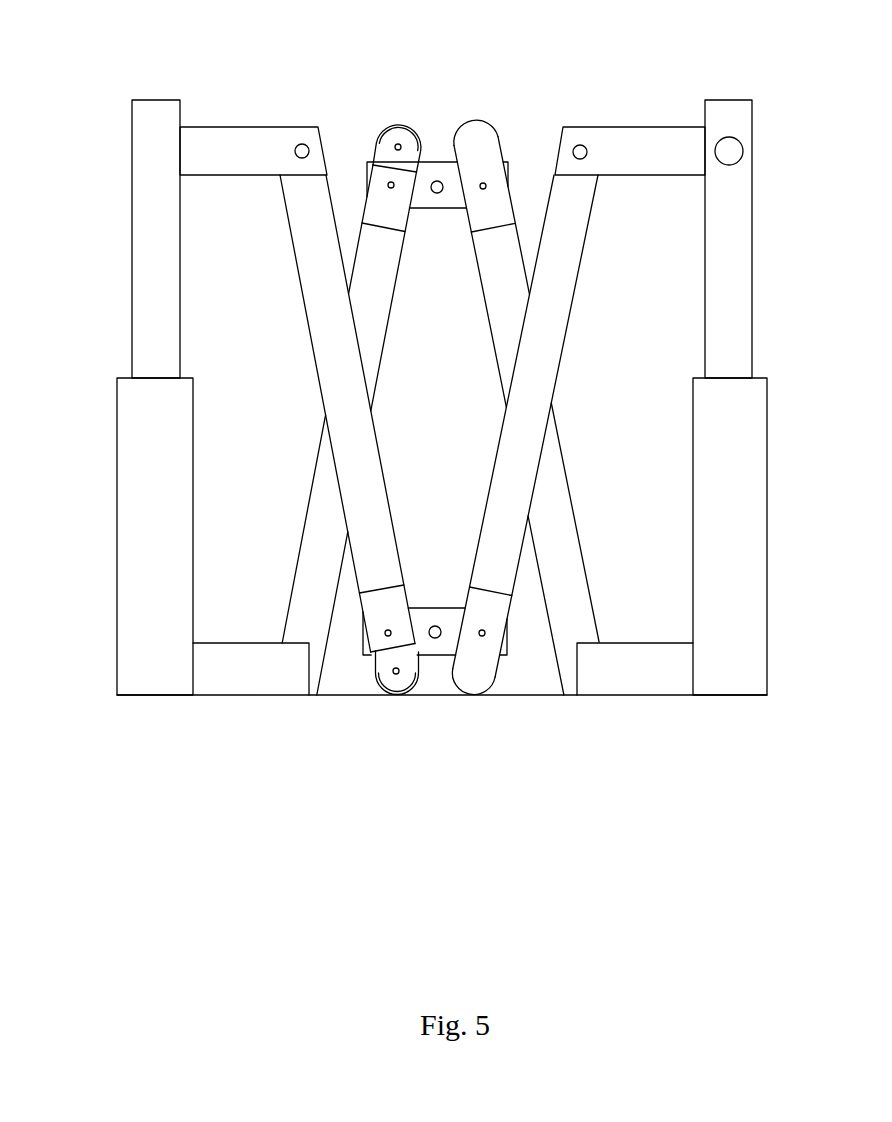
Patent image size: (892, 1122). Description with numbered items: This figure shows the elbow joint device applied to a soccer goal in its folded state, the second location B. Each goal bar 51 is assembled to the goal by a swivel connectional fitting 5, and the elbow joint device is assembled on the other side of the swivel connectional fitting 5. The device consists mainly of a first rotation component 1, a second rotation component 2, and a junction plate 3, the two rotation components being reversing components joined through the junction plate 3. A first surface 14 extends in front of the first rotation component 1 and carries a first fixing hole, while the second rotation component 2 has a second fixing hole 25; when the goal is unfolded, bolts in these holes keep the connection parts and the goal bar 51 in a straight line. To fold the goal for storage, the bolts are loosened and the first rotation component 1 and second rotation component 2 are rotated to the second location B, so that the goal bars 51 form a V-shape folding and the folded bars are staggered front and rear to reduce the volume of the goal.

The first rotation component 1 is at (488, 147).
The second rotation component 2 is at (393, 137).
The junction plate 3 is at (434, 172).
The swivel connectional fitting 5 is at (218, 138).
The first surface 14 is at (390, 682).
The second fixing hole 25 is at (377, 155).
The goal bar 51 is at (315, 288).
The second location B is at (458, 700).